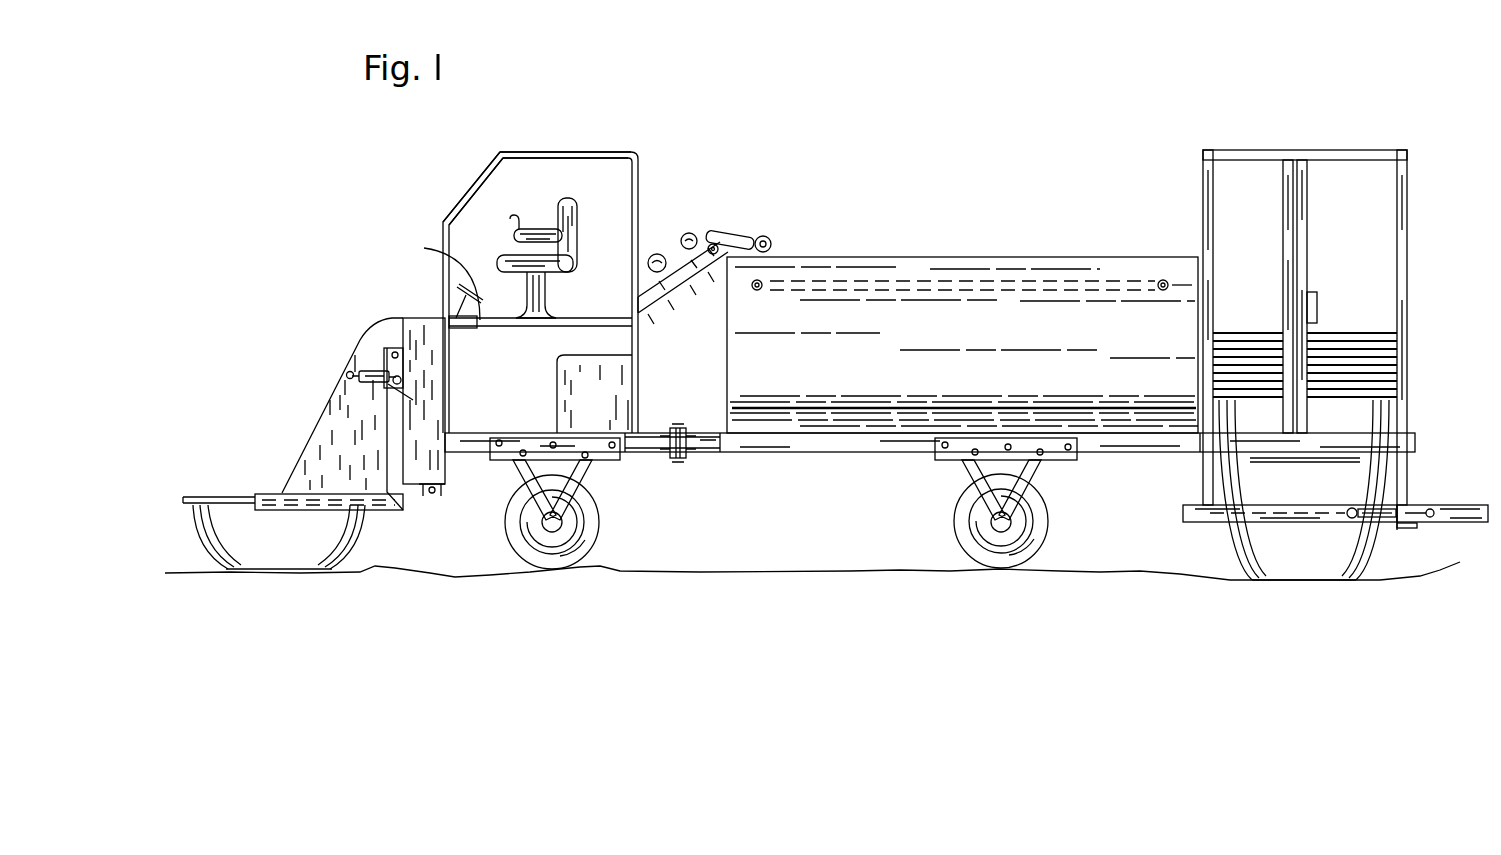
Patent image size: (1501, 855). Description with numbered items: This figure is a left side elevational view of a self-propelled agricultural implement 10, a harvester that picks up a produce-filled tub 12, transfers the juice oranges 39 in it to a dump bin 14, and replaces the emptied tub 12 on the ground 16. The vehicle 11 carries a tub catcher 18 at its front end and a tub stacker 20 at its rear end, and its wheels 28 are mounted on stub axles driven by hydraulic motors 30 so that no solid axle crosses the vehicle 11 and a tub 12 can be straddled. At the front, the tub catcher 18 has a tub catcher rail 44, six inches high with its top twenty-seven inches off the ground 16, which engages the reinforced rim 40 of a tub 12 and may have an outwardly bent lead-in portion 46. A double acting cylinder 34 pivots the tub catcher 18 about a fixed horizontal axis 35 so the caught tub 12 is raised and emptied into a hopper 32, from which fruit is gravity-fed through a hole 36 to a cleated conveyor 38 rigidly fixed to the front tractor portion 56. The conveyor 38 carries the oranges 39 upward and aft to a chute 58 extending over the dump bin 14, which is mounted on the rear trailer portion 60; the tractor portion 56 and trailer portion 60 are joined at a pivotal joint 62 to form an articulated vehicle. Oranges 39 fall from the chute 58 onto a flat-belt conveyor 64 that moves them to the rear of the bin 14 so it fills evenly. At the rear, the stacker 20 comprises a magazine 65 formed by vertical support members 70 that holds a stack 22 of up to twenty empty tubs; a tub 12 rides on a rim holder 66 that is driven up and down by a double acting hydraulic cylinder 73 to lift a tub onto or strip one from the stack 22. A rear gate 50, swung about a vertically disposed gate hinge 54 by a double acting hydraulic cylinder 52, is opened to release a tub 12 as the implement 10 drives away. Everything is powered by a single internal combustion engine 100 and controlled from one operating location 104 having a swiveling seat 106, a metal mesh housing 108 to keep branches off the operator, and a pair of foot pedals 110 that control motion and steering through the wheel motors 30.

The self-propelled agricultural implement 10 is at (392, 166).
The vehicle 11 is at (708, 160).
The tub 12 is at (202, 540).
The dump bin 14 is at (962, 257).
The ground 16 is at (707, 570).
The tub catcher 18 is at (276, 418).
The tub stacker 20 is at (1170, 177).
The stack 22 is at (1398, 350).
The wheels 28 is at (595, 533).
The hydraulic motors 30 is at (562, 520).
The hopper 32 is at (428, 317).
The double acting cylinder 34 is at (365, 372).
The fixed horizontal axis 35 is at (393, 352).
The hole 36 is at (433, 493).
The cleated conveyor 38 is at (646, 284).
The juice oranges 39 is at (661, 256).
The reinforced rim 40 is at (222, 497).
The tub catcher rail 44 is at (370, 510).
The lead-in portion 46 is at (265, 495).
The rear gate 50 is at (1431, 504).
The double acting hydraulic cylinder 52 is at (1378, 510).
The gate hinge 54 is at (1418, 529).
The tractor portion 56 is at (546, 130).
The chute 58 is at (734, 233).
The trailer portion 60 is at (946, 205).
The pivotal joint 62 is at (677, 428).
The flat-belt conveyor 64 is at (838, 283).
The magazine 65 is at (1365, 247).
The rim holder 66 is at (1193, 505).
The vertical support members 70 is at (1214, 230).
The double acting hydraulic cylinder 73 is at (1318, 300).
The internal combustion engine 100 is at (620, 368).
The operating location 104 is at (486, 163).
The swiveling seat 106 is at (567, 200).
The metal mesh housing 108 is at (458, 210).
The foot pedals 110 is at (467, 275).